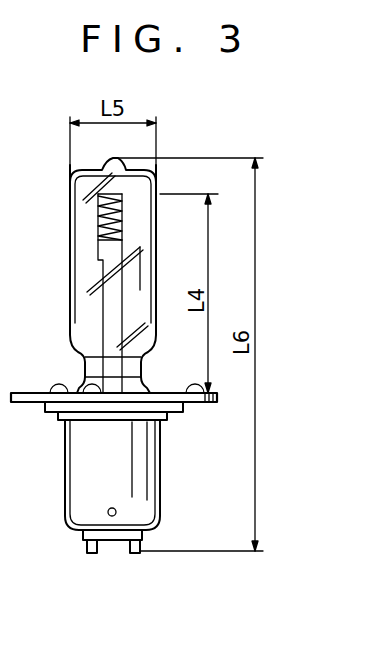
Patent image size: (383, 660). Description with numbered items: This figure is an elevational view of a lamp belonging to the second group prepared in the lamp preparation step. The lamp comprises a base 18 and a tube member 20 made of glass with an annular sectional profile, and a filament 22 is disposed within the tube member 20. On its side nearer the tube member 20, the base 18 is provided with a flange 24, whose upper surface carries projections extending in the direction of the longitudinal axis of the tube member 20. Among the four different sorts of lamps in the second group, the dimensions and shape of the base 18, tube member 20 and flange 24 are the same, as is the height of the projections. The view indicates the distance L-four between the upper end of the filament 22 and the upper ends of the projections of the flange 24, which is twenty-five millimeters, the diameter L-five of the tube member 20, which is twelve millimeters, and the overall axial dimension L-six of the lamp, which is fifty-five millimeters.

The base 18 is at (150, 463).
The tube member 20 is at (82, 287).
The filament 22 is at (124, 226).
The flange 24 is at (48, 392).